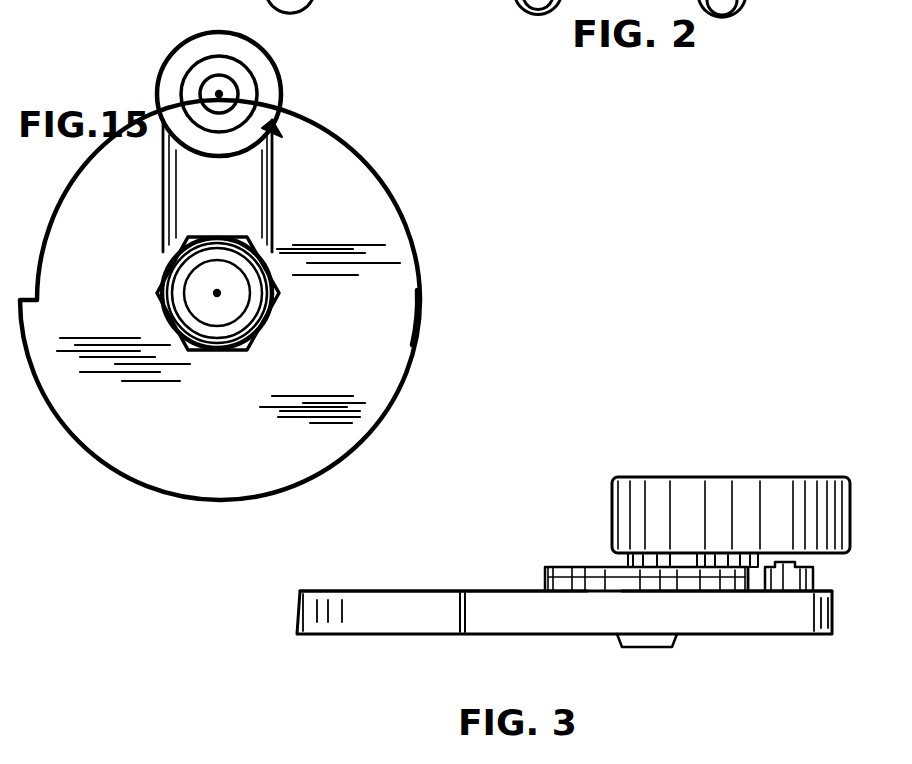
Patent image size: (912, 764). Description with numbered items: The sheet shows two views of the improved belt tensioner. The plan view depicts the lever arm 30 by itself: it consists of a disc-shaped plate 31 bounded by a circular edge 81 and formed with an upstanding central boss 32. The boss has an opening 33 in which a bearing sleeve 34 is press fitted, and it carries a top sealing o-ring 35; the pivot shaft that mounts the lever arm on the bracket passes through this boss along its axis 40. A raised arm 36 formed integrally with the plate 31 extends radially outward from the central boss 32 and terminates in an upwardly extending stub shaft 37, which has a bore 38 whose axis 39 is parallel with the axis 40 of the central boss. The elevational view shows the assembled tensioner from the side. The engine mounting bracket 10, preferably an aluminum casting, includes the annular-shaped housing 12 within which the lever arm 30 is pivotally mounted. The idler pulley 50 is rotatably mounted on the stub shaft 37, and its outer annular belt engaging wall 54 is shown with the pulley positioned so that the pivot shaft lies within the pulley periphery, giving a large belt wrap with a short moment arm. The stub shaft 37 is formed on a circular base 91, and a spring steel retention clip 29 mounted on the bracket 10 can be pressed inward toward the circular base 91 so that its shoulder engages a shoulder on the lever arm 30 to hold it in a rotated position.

In FIG. 3, the engine mounting bracket 10 is at (348, 589).
In FIG. 3, the annular-shaped housing 12 is at (541, 586).
In FIG. 3, the retention clip 29 is at (815, 585).
In FIG. 15, the lever arm 30 is at (372, 150).
In FIG. 3, the lever arm 30 is at (548, 566).
In FIG. 15, the disc-shaped plate 31 is at (368, 371).
In FIG. 15, the central boss 32 is at (260, 322).
In FIG. 3, the central boss 32 is at (628, 562).
In FIG. 15, the opening 33 is at (197, 302).
In FIG. 15, the bearing sleeve 34 is at (255, 292).
In FIG. 15, the sealing o-ring 35 is at (262, 318).
In FIG. 15, the raised arm 36 is at (226, 187).
In FIG. 15, the stub shaft 37 is at (243, 92).
In FIG. 15, the bore 38 is at (232, 86).
In FIG. 15, the axis of the bore 39 is at (219, 94).
In FIG. 15, the axis of the central boss 40 is at (217, 293).
In FIG. 3, the idler pulley 50 is at (716, 476).
In FIG. 3, the outer annular belt engaging wall 54 is at (620, 500).
In FIG. 15, the circular edge 81 is at (418, 321).
In FIG. 3, the circular base 91 is at (748, 570).